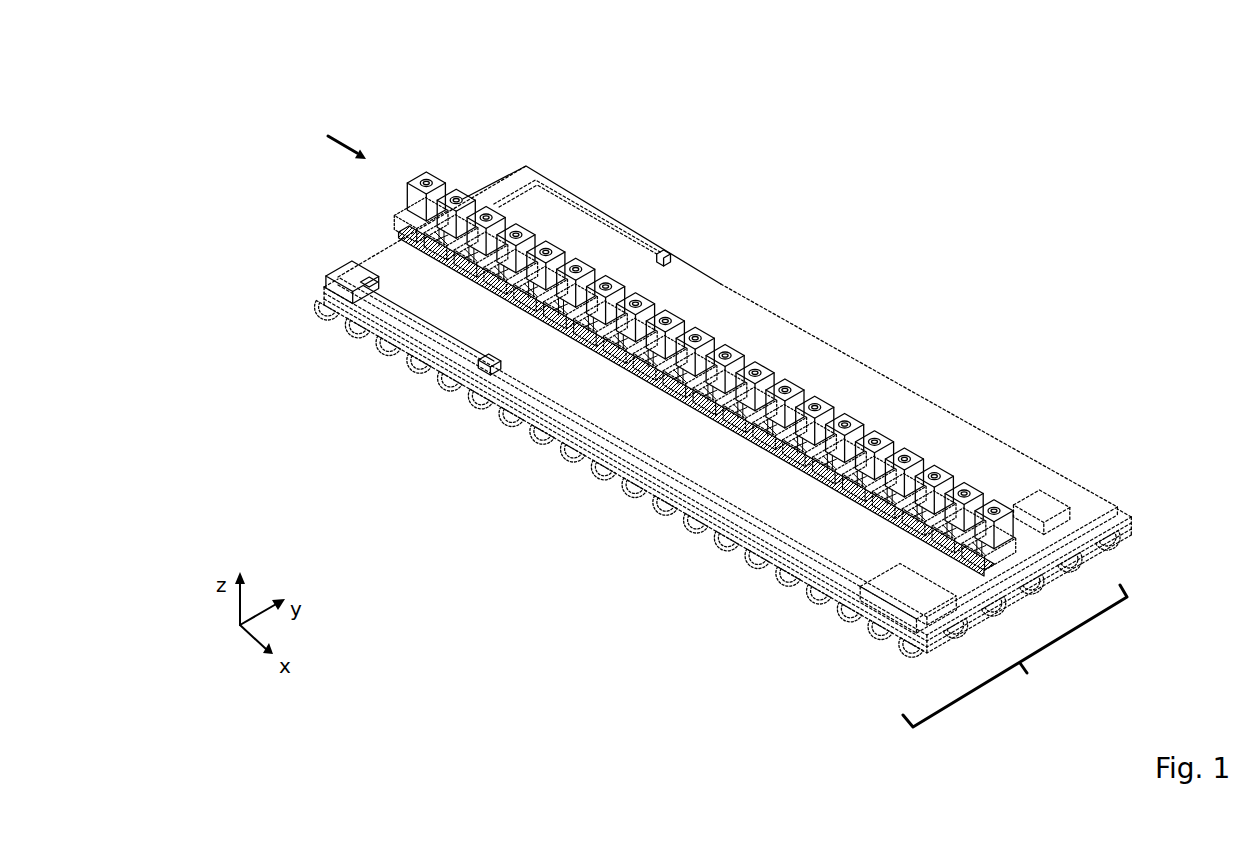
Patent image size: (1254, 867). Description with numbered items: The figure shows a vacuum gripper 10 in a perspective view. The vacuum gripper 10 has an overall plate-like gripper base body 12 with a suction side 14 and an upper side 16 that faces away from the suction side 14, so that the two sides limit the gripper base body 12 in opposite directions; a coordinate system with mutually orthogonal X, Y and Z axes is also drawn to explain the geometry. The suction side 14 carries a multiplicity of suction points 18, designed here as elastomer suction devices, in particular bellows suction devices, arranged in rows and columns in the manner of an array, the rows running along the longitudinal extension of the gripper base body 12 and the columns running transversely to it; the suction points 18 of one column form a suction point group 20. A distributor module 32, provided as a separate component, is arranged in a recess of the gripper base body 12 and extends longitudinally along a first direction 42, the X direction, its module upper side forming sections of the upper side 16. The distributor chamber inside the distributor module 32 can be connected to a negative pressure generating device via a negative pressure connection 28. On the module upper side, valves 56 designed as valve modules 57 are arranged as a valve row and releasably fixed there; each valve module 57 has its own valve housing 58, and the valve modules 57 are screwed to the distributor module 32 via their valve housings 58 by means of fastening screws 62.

The vacuum gripper 10 is at (708, 97).
The gripper base body 12 is at (814, 350).
The suction side 14 is at (756, 610).
The upper side 16 is at (713, 236).
The suction points 18 is at (328, 322).
The suction point group 20 is at (1015, 656).
The negative pressure connection 28 is at (1022, 498).
The distributor module 32 is at (424, 242).
The first direction 42 is at (328, 136).
The valve 56 is at (880, 419).
The valve module 57 is at (862, 408).
The valve housing 58 is at (862, 491).
The fastening screws 62 is at (768, 427).